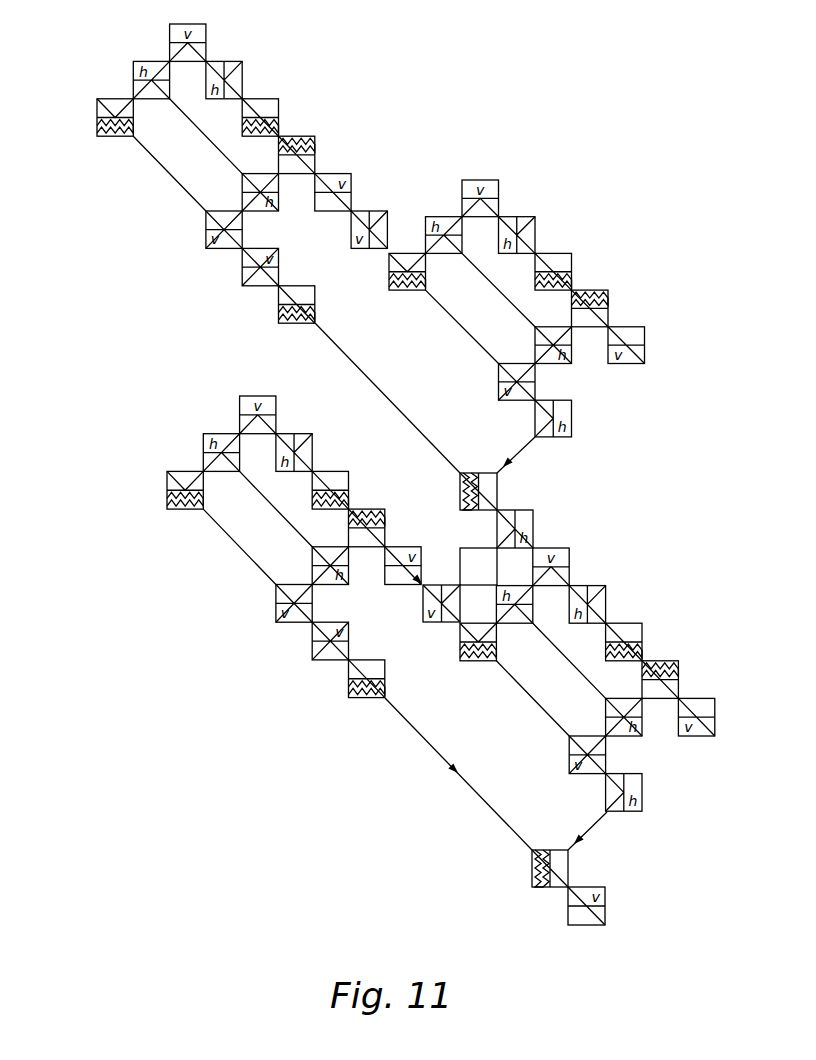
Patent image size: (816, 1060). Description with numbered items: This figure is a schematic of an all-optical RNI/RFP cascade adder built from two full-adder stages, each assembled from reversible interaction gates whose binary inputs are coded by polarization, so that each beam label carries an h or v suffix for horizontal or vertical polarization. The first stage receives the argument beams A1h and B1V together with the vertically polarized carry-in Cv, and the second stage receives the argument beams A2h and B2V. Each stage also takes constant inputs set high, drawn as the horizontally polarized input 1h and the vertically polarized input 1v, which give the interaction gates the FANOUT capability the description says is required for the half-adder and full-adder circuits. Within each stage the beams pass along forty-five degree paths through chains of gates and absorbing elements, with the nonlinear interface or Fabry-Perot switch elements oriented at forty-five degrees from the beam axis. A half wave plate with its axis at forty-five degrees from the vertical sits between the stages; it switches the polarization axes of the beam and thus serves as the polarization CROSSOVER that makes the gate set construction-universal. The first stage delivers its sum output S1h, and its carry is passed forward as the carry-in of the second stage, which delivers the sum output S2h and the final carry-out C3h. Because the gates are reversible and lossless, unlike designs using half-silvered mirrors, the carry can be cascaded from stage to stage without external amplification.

The horizontally polarized input A1 A1h is at (97, 100).
The vertically polarized input B1 B1V is at (59, 67).
The horizontally polarized constant-high input 1h is at (243, 62).
The vertically polarized constant-high input 1v is at (241, 287).
The vertically polarized carry-in Cv is at (387, 213).
The horizontally polarized sum output S1 S1h is at (644, 364).
The horizontally polarized input A2 A2h is at (167, 470).
The vertically polarized input B2 B2V is at (114, 436).
The horizontally polarized sum output S2 S2h is at (715, 736).
The horizontally polarized carry-out C3 C3h is at (605, 925).